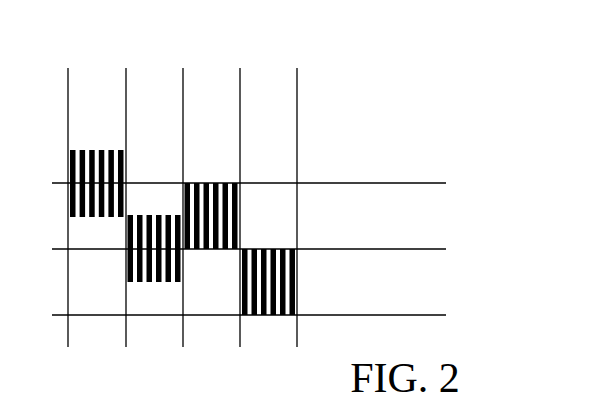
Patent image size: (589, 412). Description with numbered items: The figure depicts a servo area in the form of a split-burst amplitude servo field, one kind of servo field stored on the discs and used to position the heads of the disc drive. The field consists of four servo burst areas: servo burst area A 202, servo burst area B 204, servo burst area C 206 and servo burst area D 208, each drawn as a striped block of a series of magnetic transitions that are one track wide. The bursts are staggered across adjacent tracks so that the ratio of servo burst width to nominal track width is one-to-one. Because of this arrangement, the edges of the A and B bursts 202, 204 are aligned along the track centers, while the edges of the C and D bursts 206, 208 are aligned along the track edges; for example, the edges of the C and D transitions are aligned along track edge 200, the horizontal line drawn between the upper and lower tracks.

The track edge 200 is at (430, 249).
The servo burst area A 202 is at (93, 91).
The servo burst area B 204 is at (150, 91).
The servo burst area C 206 is at (215, 91).
The servo burst area D 208 is at (272, 91).